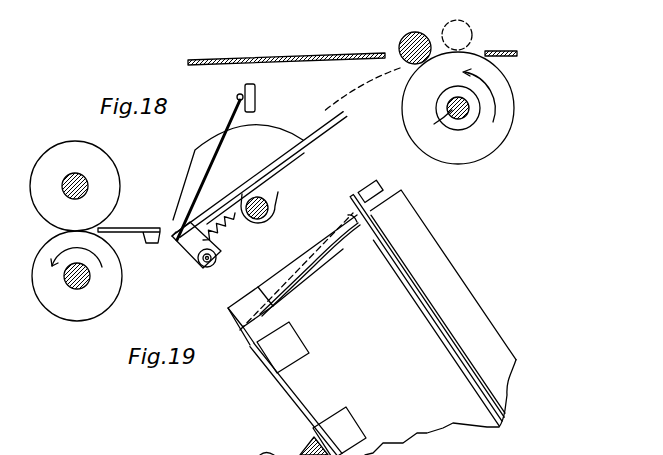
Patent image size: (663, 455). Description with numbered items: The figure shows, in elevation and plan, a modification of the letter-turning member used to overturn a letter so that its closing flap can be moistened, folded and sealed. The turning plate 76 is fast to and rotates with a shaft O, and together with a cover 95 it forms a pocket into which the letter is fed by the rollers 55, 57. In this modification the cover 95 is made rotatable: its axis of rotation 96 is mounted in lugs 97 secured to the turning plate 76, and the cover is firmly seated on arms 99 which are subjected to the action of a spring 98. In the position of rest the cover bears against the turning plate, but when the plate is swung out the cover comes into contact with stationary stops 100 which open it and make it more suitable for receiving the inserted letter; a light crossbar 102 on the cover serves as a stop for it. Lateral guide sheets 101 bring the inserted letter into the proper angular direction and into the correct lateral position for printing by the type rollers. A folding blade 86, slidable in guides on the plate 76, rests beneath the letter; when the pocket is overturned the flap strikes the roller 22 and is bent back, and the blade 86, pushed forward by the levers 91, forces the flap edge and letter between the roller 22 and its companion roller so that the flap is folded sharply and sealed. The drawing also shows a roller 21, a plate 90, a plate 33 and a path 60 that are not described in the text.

In FIG. 18, the roller 22 is at (67, 142).
In FIG. 18, the lower feed roller 21 is at (47, 247).
In FIG. 18, the guide plate 90 is at (140, 228).
In FIG. 18, the platen plate 33 is at (322, 58).
In FIG. 18, the feed roller 57 is at (401, 43).
In FIG. 18, the feed roller 55 is at (482, 150).
In FIG. 18, the sheet path 60 is at (361, 90).
In FIG. 18, the folding blade 86 is at (340, 122).
In FIG. 19, the folding blade 86 is at (263, 358).
In FIG. 18, the turning plate 76 is at (303, 158).
In FIG. 18, the lateral guide sheets 101 is at (188, 190).
In FIG. 19, the lateral guide sheets 101 is at (322, 290).
In FIG. 18, the cover 95 is at (208, 186).
In FIG. 19, the cover 95 is at (322, 274).
In FIG. 18, the stationary stops 100 is at (255, 100).
In FIG. 19, the stationary stops 100 is at (380, 183).
In FIG. 18, the light crossbar 102 is at (238, 97).
In FIG. 19, the light crossbar 102 is at (352, 212).
In FIG. 18, the shaft O is at (277, 201).
In FIG. 18, the spring 98 is at (242, 224).
In FIG. 18, the lugs 97 is at (217, 249).
In FIG. 18, the axis of rotation 96 is at (207, 268).
In FIG. 18, the arms 99 is at (182, 255).
In FIG. 19, the levers 91 is at (305, 440).